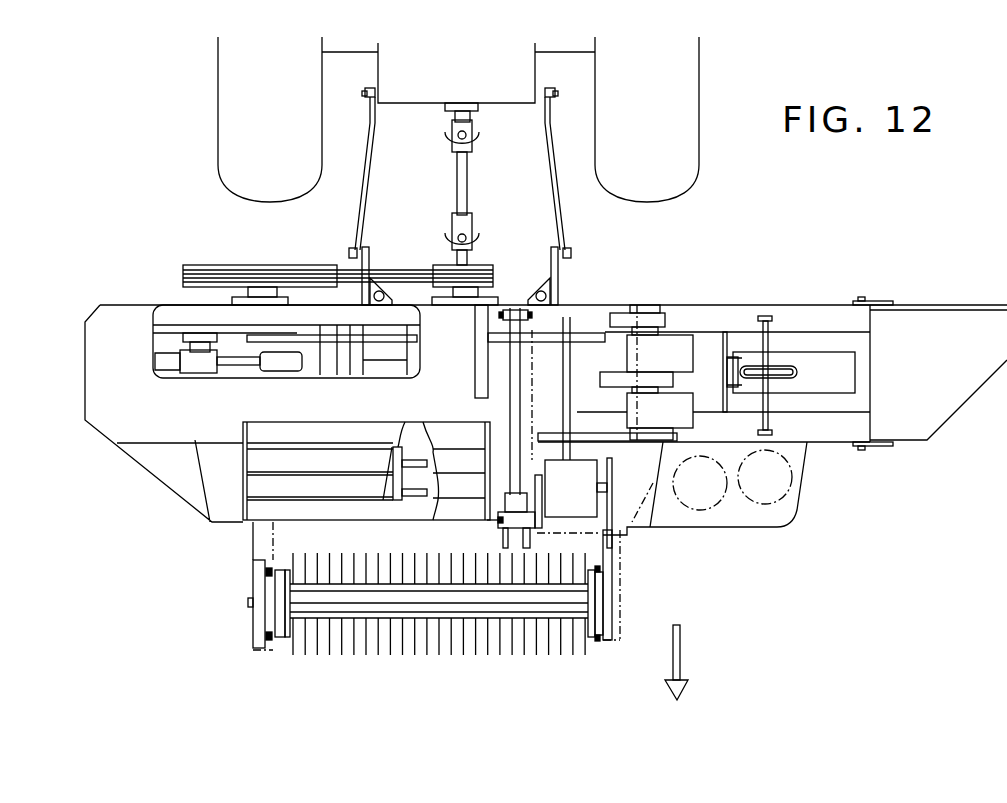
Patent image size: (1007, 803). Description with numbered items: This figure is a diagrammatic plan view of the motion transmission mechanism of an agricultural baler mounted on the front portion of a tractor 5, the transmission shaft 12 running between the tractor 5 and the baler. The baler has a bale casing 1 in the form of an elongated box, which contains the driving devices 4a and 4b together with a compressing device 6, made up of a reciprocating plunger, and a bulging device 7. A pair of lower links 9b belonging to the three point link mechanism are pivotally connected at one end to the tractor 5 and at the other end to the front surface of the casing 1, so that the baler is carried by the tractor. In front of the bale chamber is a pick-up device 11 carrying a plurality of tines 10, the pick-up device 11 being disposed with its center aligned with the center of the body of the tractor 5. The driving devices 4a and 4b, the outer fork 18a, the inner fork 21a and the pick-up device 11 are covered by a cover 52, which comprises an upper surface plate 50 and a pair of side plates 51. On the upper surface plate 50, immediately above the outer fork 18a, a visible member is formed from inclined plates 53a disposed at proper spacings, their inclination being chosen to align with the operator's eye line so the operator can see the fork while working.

The bale casing 1 is at (693, 305).
The driving device 4a is at (188, 320).
The driving device 4b is at (600, 338).
The tractor 5 is at (515, 70).
The compressing device 6 is at (424, 538).
The bulging device 7 is at (687, 347).
The lower link 9b is at (371, 169).
The tines 10 is at (555, 643).
The pick-up device 11 is at (276, 665).
The drive shaft with universal joints 12 is at (458, 201).
The outer fork 18a is at (414, 447).
The inner fork 21a is at (502, 535).
The upper surface plate 50 is at (193, 422).
The side plate 51 is at (252, 552).
The cover 52 is at (392, 522).
The inclined plate 53a is at (260, 483).